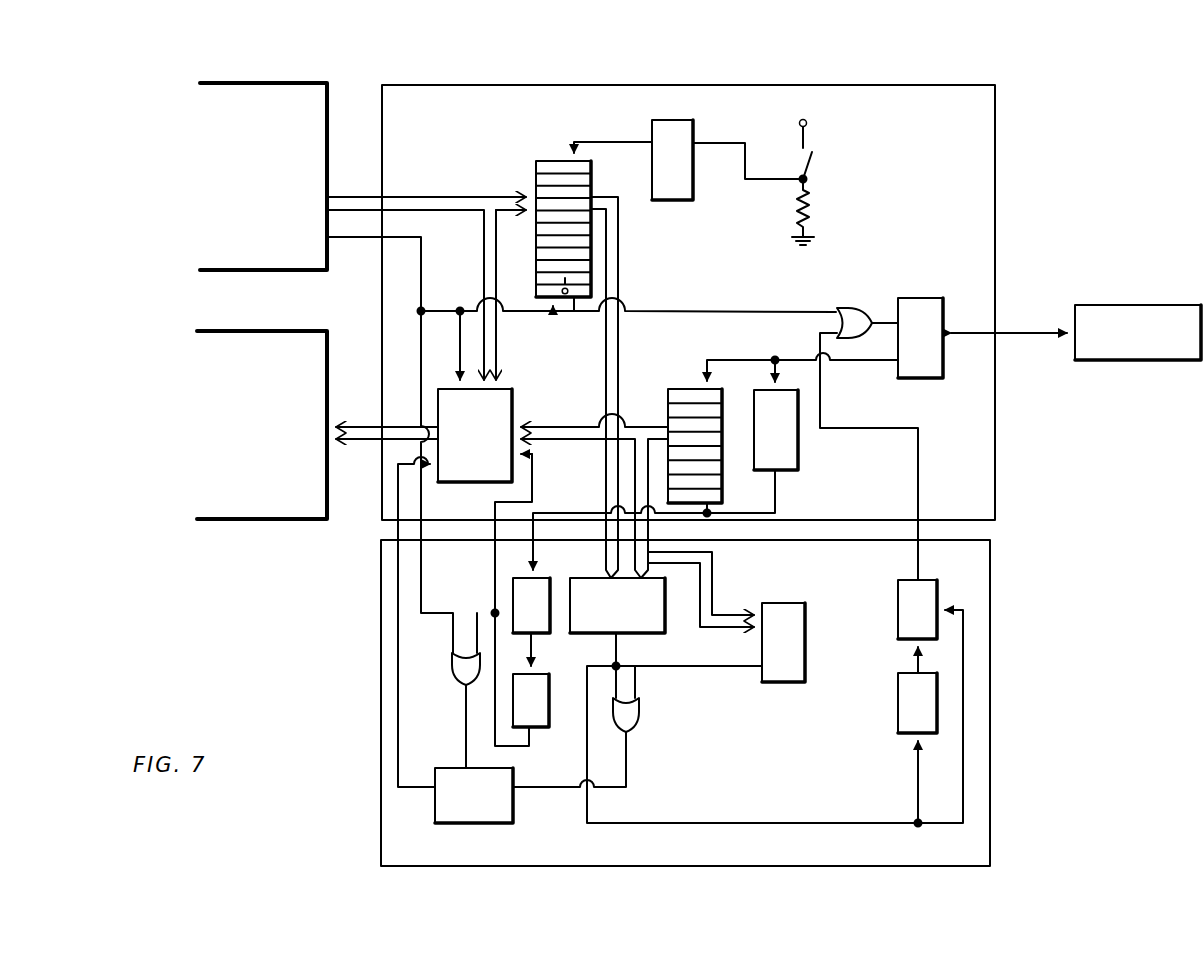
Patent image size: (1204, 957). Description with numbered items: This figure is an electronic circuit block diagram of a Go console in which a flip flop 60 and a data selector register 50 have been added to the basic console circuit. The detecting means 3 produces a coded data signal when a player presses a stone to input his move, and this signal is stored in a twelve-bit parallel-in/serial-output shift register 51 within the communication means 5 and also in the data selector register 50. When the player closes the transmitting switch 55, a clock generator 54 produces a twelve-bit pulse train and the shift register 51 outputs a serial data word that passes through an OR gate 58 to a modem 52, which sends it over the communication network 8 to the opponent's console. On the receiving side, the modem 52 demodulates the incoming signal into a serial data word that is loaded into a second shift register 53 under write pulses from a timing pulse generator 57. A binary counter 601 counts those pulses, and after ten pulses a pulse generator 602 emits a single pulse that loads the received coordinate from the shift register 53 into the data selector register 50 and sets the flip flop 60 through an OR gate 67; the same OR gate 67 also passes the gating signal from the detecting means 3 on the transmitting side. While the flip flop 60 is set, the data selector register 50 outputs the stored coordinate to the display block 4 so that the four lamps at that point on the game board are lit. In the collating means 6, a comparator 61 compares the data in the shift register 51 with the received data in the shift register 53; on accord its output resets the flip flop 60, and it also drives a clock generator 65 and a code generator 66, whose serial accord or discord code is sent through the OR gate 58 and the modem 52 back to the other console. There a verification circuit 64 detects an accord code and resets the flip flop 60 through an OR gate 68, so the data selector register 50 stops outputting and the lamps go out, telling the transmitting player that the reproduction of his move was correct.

The detecting means 3 is at (300, 96).
The memory unit 4 is at (288, 347).
The interface circuit 5 is at (947, 96).
The collating means 6 is at (978, 563).
The communication network 8 is at (1143, 310).
The data selector register 50 is at (500, 410).
The shift register 51 is at (535, 185).
The modem 52 is at (914, 308).
The shift register 53 is at (672, 402).
The clock generator 54 is at (690, 125).
The transmitting switch 55 is at (812, 158).
The timing pulse generator 57 is at (790, 452).
The OR gate 58 is at (840, 308).
The flip flop 60 is at (500, 812).
The binary counter 601 is at (537, 592).
The pulse generator 602 is at (540, 718).
The comparator 61 is at (645, 633).
The verification circuit 64 is at (790, 612).
The clock generator 65 is at (902, 704).
The code generator 66 is at (905, 603).
The OR gate 67 is at (466, 672).
The OR gate 68 is at (640, 708).